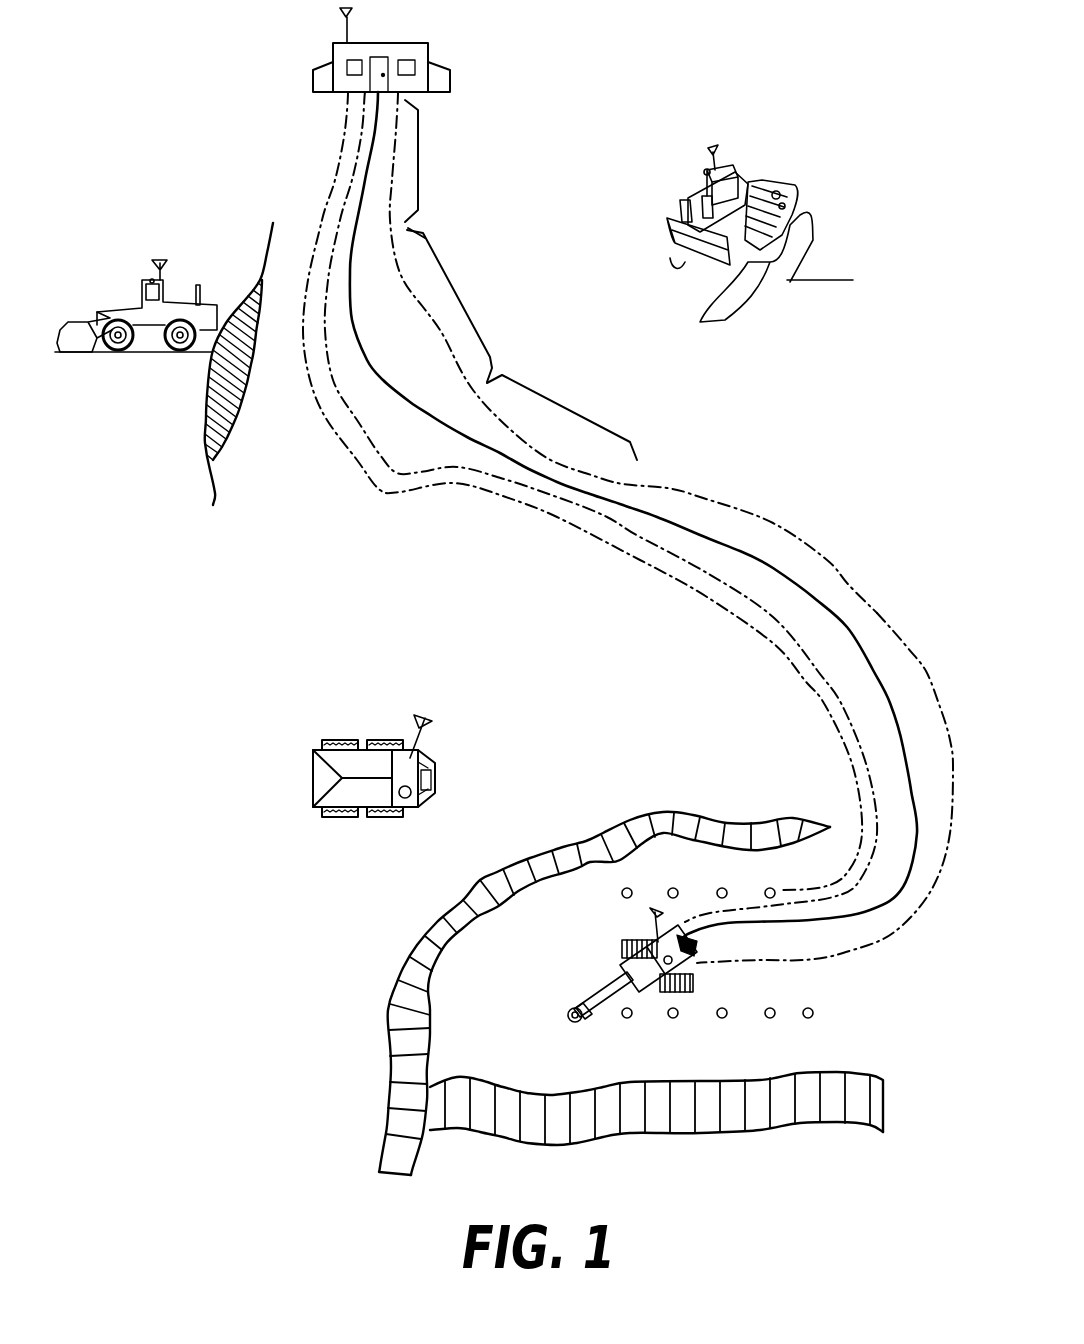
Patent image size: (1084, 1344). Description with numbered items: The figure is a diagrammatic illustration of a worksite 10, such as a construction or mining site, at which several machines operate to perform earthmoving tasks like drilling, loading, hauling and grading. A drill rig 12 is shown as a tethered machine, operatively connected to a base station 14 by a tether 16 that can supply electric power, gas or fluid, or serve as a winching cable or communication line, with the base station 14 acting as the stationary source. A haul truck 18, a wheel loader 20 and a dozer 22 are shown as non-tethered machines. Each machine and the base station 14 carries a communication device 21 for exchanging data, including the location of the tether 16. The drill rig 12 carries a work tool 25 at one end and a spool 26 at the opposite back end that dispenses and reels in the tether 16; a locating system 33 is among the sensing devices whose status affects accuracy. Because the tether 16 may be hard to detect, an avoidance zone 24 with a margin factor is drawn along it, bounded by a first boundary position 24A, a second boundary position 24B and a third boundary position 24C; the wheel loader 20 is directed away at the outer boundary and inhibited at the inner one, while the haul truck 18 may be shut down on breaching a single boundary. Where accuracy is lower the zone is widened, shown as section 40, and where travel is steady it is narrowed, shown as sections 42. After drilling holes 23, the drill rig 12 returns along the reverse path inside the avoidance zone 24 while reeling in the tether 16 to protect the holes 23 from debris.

The worksite 10 is at (335, 622).
The drill rig 12 is at (574, 960).
The base station 14 is at (420, 53).
The tether 16 is at (793, 580).
The haul truck 18 is at (352, 838).
The wheel loader 20 is at (94, 360).
The communication device 21 is at (348, 27).
The dozer 22 is at (790, 146).
The holes 23 is at (722, 1019).
The avoidance zone 24 is at (840, 593).
The first boundary position 24A is at (813, 667).
The second boundary position 24B is at (933, 680).
The third boundary position 24C is at (723, 608).
The work tool 25 is at (575, 1012).
The spool 26 is at (698, 938).
The locating system 33 is at (407, 800).
The section 40 is at (457, 292).
The section 42 is at (418, 148).